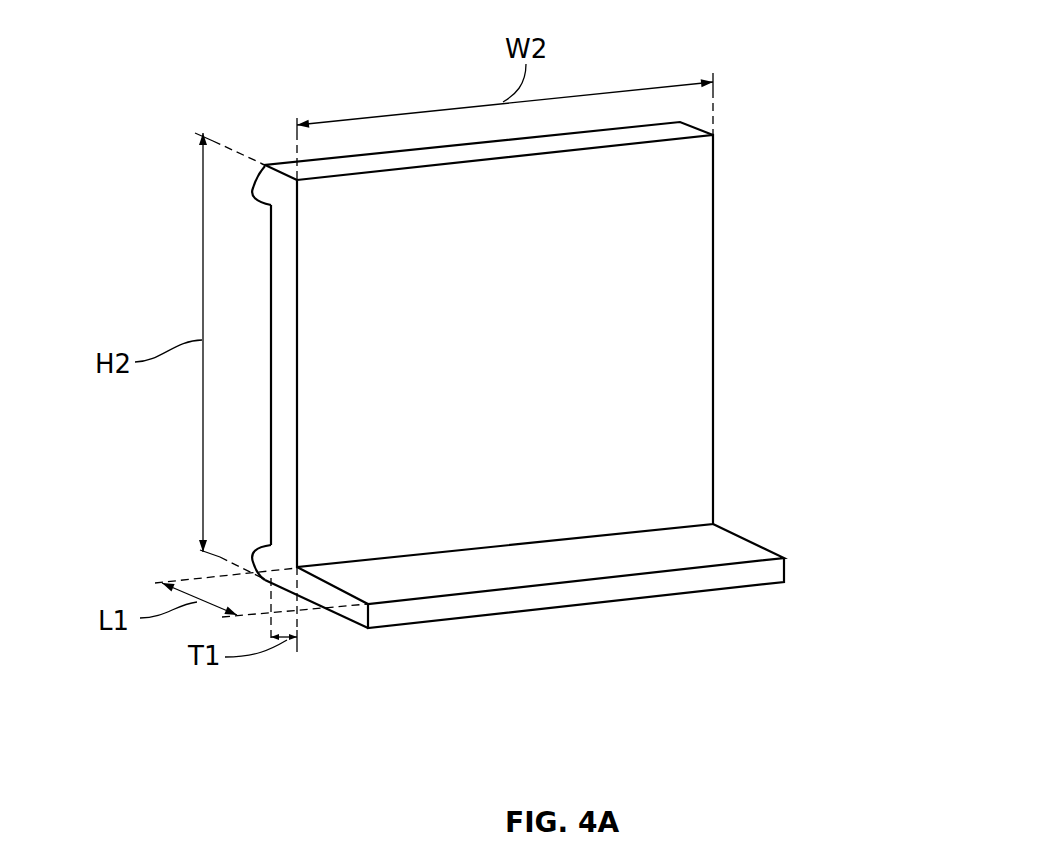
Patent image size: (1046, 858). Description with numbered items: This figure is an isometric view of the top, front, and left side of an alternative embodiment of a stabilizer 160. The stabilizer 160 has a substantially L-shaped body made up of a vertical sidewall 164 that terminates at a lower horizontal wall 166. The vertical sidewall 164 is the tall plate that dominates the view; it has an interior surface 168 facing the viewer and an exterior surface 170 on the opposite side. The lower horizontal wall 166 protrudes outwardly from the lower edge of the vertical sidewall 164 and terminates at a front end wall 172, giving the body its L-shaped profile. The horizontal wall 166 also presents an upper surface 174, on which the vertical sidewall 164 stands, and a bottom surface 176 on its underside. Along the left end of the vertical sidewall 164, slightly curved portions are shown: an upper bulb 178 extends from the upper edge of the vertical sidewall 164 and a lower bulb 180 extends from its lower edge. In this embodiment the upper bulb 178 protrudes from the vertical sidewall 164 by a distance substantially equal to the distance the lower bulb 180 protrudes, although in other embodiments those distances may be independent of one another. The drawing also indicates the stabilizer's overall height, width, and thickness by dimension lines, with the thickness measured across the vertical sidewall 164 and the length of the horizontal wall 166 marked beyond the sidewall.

The stabilizer 160 is at (690, 48).
The vertical sidewall 164 is at (713, 392).
The lower horizontal wall 166 is at (732, 557).
The interior surface 168 is at (695, 305).
The exterior surface 170 is at (268, 360).
The front end wall 172 is at (735, 577).
The upper surface 174 is at (720, 542).
The bottom surface 176 is at (348, 622).
The upper bulb 178 is at (272, 183).
The lower bulb 180 is at (270, 543).